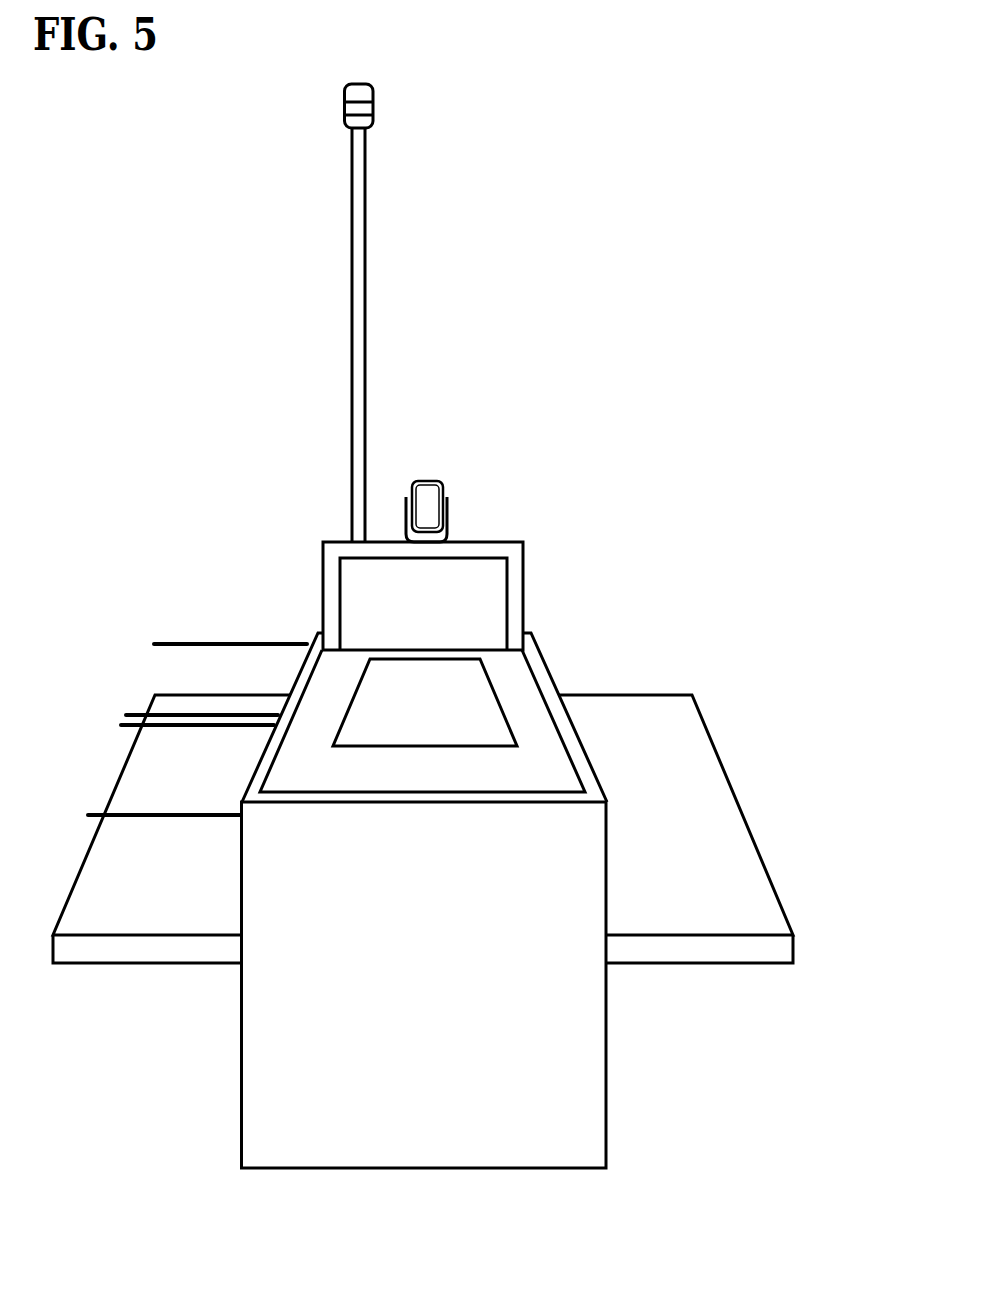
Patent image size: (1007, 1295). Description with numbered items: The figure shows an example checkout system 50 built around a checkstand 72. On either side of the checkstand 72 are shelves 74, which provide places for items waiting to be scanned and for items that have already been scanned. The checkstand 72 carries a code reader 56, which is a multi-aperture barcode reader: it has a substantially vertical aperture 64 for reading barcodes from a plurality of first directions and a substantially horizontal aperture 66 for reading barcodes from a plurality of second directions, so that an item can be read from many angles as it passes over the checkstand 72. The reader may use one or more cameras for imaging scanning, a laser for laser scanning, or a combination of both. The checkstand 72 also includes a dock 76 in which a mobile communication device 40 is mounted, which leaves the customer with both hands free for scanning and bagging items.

The checkout system 50 is at (720, 180).
The mobile communication device 40 is at (432, 502).
The dock 76 is at (450, 513).
The code reader 56 is at (525, 547).
The substantially vertical aperture 64 is at (487, 608).
The substantially horizontal aperture 66 is at (462, 668).
The checkstand 72 is at (313, 633).
The shelves 74 is at (132, 763).